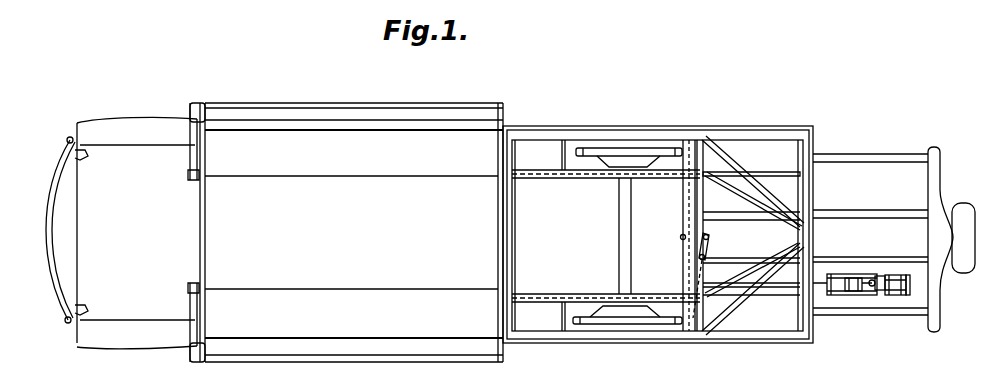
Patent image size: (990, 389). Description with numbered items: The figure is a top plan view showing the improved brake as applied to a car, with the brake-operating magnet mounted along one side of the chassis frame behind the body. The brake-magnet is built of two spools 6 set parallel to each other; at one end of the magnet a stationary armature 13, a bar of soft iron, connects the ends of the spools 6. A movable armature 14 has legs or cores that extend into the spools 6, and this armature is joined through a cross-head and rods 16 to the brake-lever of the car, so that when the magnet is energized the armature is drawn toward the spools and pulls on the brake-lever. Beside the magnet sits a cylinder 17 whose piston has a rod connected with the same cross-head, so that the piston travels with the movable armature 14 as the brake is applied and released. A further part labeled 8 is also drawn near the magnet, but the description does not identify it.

The rods 16 is at (849, 291).
The cylinder 17 is at (853, 278).
The movable armature 14 is at (876, 290).
The spools of the brake-magnet 6 is at (896, 291).
The rod 8 is at (900, 275).
The stationary armature 13 is at (910, 285).